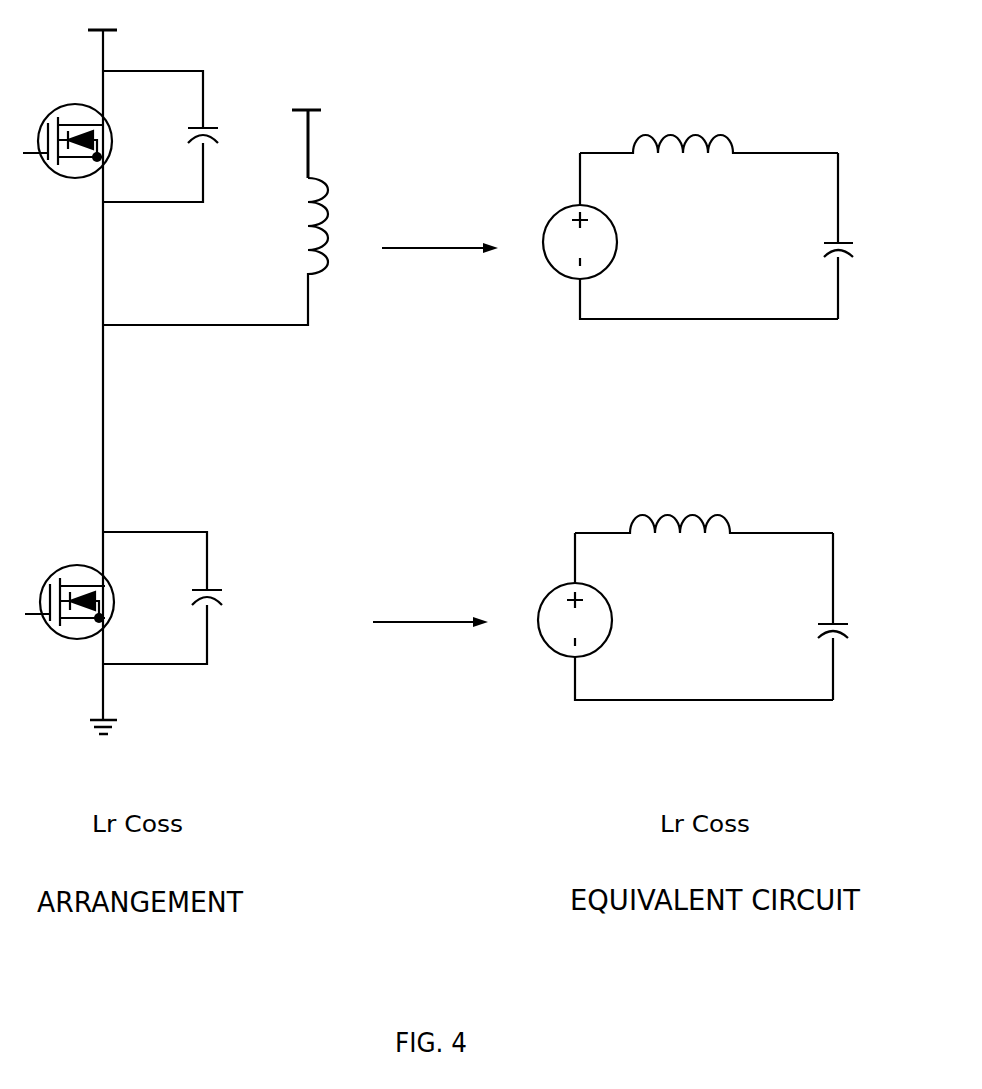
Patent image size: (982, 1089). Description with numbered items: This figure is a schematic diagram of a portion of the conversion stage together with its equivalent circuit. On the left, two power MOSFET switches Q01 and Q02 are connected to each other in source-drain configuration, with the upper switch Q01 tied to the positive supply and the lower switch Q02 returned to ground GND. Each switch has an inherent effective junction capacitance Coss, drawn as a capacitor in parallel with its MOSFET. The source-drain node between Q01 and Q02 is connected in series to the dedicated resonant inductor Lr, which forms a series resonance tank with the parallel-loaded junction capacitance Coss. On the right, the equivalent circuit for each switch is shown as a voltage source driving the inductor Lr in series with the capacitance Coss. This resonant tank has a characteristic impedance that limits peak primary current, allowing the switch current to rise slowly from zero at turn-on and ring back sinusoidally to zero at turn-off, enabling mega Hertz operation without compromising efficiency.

The power MOSFET switch Q01 is at (67, 127).
The power MOSFET switch Q02 is at (68, 588).
The junction capacitance Coss is at (509, 385).
The dedicated resonant inductor Lr is at (470, 317).
The ground GND is at (139, 733).